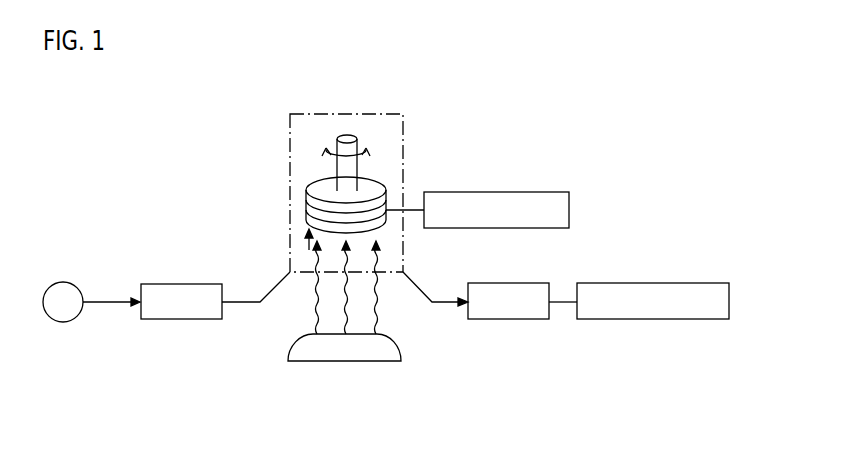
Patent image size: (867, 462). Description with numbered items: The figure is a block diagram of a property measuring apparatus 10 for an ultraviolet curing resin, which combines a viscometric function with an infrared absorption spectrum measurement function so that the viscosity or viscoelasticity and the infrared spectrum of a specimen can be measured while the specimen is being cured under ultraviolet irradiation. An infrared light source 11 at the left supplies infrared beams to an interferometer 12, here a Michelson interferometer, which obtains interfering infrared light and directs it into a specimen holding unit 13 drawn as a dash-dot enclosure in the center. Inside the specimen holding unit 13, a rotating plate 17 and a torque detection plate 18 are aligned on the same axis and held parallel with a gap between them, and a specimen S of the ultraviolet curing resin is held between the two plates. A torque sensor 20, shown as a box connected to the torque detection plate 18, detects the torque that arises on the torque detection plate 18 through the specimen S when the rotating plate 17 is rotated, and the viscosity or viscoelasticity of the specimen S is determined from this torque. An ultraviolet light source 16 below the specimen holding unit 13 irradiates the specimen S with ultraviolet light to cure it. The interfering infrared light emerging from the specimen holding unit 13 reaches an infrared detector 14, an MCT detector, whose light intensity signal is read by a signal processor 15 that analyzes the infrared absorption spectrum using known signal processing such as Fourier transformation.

The property measuring apparatus 10 is at (613, 103).
The infrared light source 11 is at (63, 282).
The interferometer 12 is at (147, 320).
The specimen holding unit 13 is at (359, 113).
The infrared detector 14 is at (507, 283).
The signal processor 15 is at (619, 320).
The ultraviolet light source 16 is at (344, 362).
The rotating plate 17 is at (322, 189).
The torque detection plate 18 is at (311, 222).
The torque sensor 20 is at (496, 191).
The specimen S is at (311, 207).